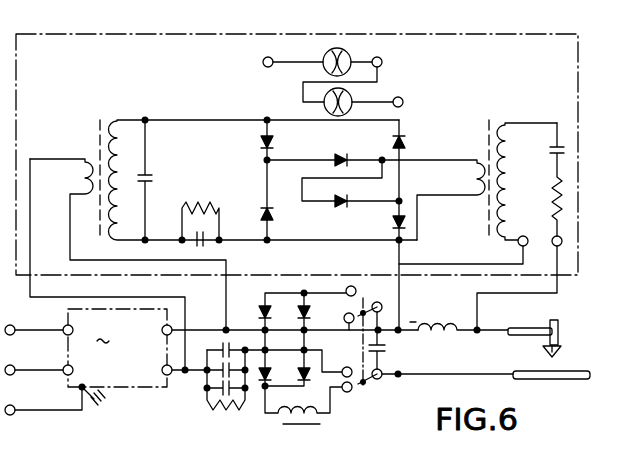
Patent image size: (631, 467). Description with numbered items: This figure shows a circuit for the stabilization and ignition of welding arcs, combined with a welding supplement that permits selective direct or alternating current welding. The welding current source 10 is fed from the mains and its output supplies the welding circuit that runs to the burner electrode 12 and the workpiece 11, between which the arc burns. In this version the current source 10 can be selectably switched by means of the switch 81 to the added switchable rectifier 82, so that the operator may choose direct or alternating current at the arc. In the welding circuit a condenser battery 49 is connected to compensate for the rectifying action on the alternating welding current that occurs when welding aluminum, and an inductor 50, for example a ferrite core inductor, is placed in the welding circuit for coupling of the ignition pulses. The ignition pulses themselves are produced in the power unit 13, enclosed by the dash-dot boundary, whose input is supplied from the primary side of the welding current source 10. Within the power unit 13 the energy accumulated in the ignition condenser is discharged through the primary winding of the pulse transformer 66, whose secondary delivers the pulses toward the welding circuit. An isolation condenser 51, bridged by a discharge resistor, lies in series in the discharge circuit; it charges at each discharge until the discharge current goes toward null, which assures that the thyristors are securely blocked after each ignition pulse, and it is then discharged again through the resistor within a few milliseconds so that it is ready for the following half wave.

The power unit 13 is at (532, 86).
The pulse transformer 66 is at (486, 150).
The isolation condenser 51 is at (203, 246).
The welding current source 10 is at (114, 381).
The condenser battery 49 is at (207, 393).
The switchable rectifier 82 is at (292, 372).
The switch 81 is at (367, 384).
The inductor 50 is at (439, 323).
The burner electrode 12 is at (558, 337).
The workpiece 11 is at (547, 380).